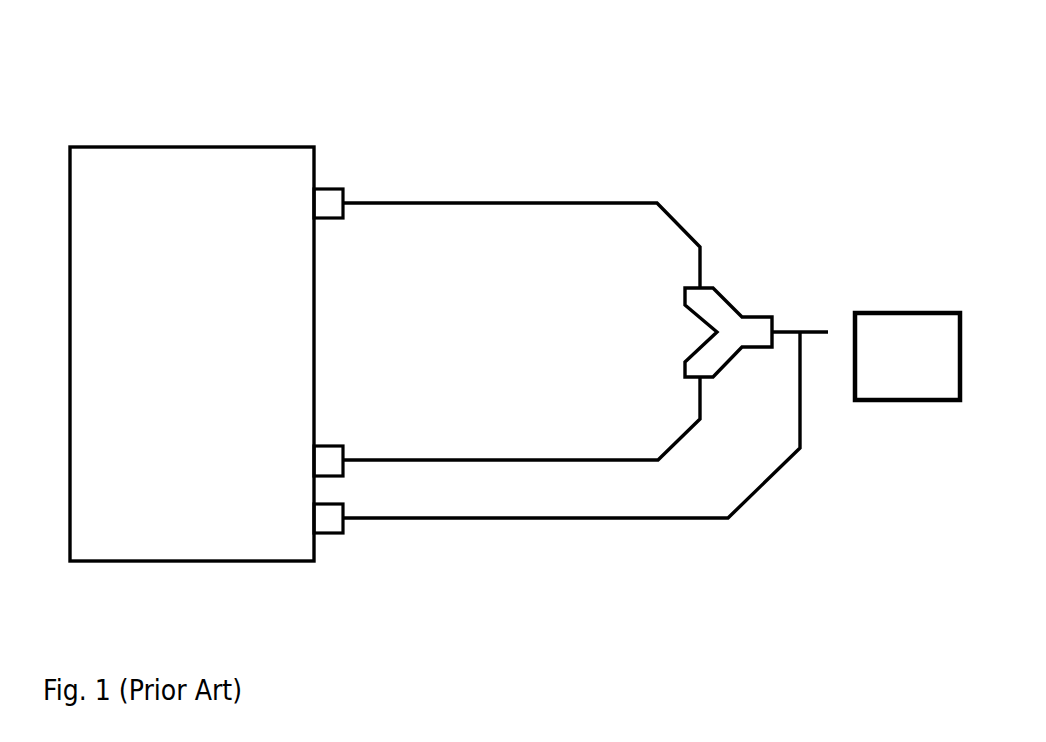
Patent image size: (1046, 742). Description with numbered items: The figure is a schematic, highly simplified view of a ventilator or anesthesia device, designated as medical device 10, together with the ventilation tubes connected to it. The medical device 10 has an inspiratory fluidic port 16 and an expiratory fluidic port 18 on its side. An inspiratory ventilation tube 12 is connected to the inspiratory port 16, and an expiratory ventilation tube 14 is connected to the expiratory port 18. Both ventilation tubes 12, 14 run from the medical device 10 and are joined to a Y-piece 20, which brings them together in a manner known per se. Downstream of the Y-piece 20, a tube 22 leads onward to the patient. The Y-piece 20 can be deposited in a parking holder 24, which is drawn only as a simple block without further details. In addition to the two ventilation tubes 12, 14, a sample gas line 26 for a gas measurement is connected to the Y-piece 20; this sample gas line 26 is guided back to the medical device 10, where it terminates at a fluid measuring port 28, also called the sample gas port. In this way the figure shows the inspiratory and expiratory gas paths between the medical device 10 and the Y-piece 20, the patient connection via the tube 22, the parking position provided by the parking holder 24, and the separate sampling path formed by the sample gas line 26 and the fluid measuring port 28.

The medical device 10 is at (160, 58).
The inspiratory ventilation tube 12 is at (521, 411).
The expiratory ventilation tube 14 is at (521, 196).
The inspiratory fluidic port 16 is at (371, 426).
The expiratory fluidic port 18 is at (371, 168).
The Y-piece 20 is at (745, 276).
The tube 22 is at (839, 274).
The parking holder 24 is at (874, 435).
The sample gas line 26 is at (571, 475).
The fluid measuring port 28 is at (371, 554).